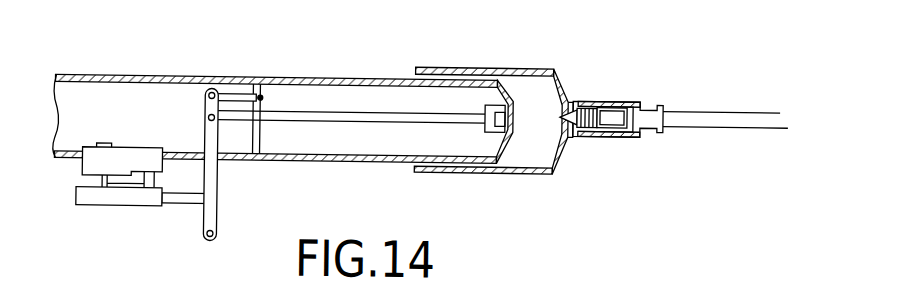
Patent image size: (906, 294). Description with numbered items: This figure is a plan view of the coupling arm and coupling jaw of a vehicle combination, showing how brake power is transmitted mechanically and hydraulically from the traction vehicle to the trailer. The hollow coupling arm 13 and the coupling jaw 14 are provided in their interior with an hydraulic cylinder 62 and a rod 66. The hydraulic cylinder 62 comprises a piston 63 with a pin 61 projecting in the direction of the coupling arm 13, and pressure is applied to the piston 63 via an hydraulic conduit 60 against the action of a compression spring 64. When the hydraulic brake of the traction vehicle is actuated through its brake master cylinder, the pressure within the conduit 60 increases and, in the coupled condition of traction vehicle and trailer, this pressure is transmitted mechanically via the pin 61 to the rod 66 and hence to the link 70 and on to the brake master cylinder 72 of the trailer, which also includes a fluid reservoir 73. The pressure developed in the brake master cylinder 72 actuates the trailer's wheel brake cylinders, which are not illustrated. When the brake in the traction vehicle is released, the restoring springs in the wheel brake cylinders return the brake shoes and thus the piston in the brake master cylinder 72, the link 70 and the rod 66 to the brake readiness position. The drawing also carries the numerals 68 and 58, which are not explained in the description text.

The coupling arm 13 is at (345, 74).
The coupling jaw 14 is at (526, 62).
The sheet reference 58 is at (682, 280).
The hydraulic conduit 60 is at (770, 101).
The pin 61 is at (551, 124).
The hydraulic cylinder 62 is at (647, 87).
The piston 63 is at (618, 101).
The compression spring 64 is at (583, 94).
The rod 66 is at (363, 118).
The link arm 68 is at (237, 91).
The link 70 is at (221, 178).
The brake master cylinder 72 is at (96, 209).
The fluid reservoir 73 is at (117, 165).